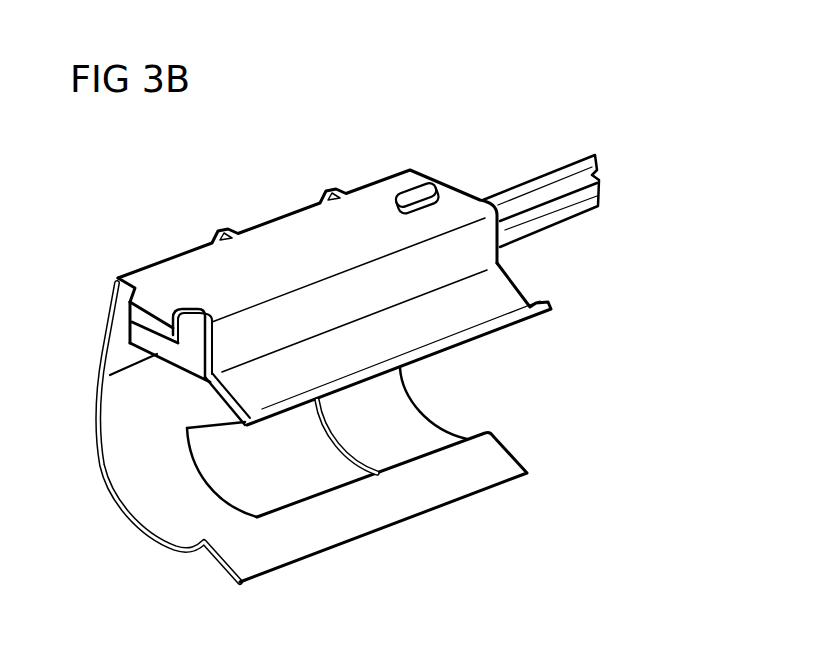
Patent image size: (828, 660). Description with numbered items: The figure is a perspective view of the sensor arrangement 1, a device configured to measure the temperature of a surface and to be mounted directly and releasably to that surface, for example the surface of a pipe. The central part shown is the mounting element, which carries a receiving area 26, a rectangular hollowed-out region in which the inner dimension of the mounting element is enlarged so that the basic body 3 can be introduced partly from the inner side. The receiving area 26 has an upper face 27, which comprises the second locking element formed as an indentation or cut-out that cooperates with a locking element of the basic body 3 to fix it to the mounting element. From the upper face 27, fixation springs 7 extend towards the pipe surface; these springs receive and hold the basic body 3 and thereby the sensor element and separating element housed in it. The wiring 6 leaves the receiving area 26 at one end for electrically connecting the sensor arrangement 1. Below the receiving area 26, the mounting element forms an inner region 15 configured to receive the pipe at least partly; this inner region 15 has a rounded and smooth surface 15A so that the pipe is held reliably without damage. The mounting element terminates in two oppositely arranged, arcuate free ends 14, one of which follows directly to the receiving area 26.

The sensor arrangement 1 is at (630, 253).
The basic body 3 is at (155, 358).
The wiring 6 is at (533, 184).
The fixation springs 7 is at (155, 306).
The free ends 14 is at (548, 312).
The inner region 15 is at (190, 456).
The rounded and/or smooth surface 15A is at (152, 521).
The receiving area 26 is at (275, 204).
The upper face 27 is at (368, 200).